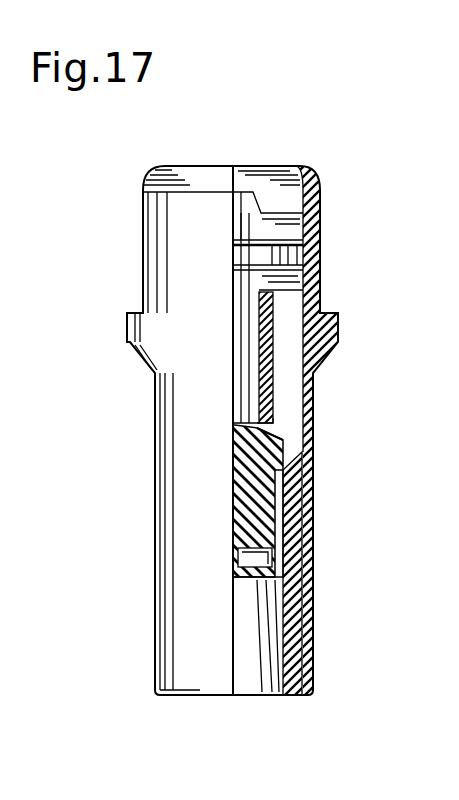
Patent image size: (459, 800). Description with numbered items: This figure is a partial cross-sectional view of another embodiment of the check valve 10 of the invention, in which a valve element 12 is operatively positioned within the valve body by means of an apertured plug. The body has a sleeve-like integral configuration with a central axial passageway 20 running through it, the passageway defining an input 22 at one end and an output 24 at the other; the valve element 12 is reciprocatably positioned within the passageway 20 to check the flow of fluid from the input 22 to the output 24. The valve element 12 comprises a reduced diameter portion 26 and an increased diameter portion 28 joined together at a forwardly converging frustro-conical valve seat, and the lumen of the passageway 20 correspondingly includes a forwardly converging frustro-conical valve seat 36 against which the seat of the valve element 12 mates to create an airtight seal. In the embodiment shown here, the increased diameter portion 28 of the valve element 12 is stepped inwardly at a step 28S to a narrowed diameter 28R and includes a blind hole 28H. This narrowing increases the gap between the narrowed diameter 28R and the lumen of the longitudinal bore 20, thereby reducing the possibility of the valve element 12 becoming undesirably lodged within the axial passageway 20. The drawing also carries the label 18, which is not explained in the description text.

The check valve 10 is at (100, 146).
The valve element 12 is at (258, 517).
The sealing ring 18 is at (320, 245).
The central axial passageway 20 is at (288, 323).
The input 22 is at (242, 711).
The output 24 is at (245, 154).
The reduced diameter portion 26 is at (275, 549).
The increased diameter portion 28 is at (298, 447).
The blind hole 28H is at (247, 383).
The narrowed diameter 28R is at (262, 398).
The step 28S is at (278, 432).
The frustro-conical valve seat 36 is at (283, 577).